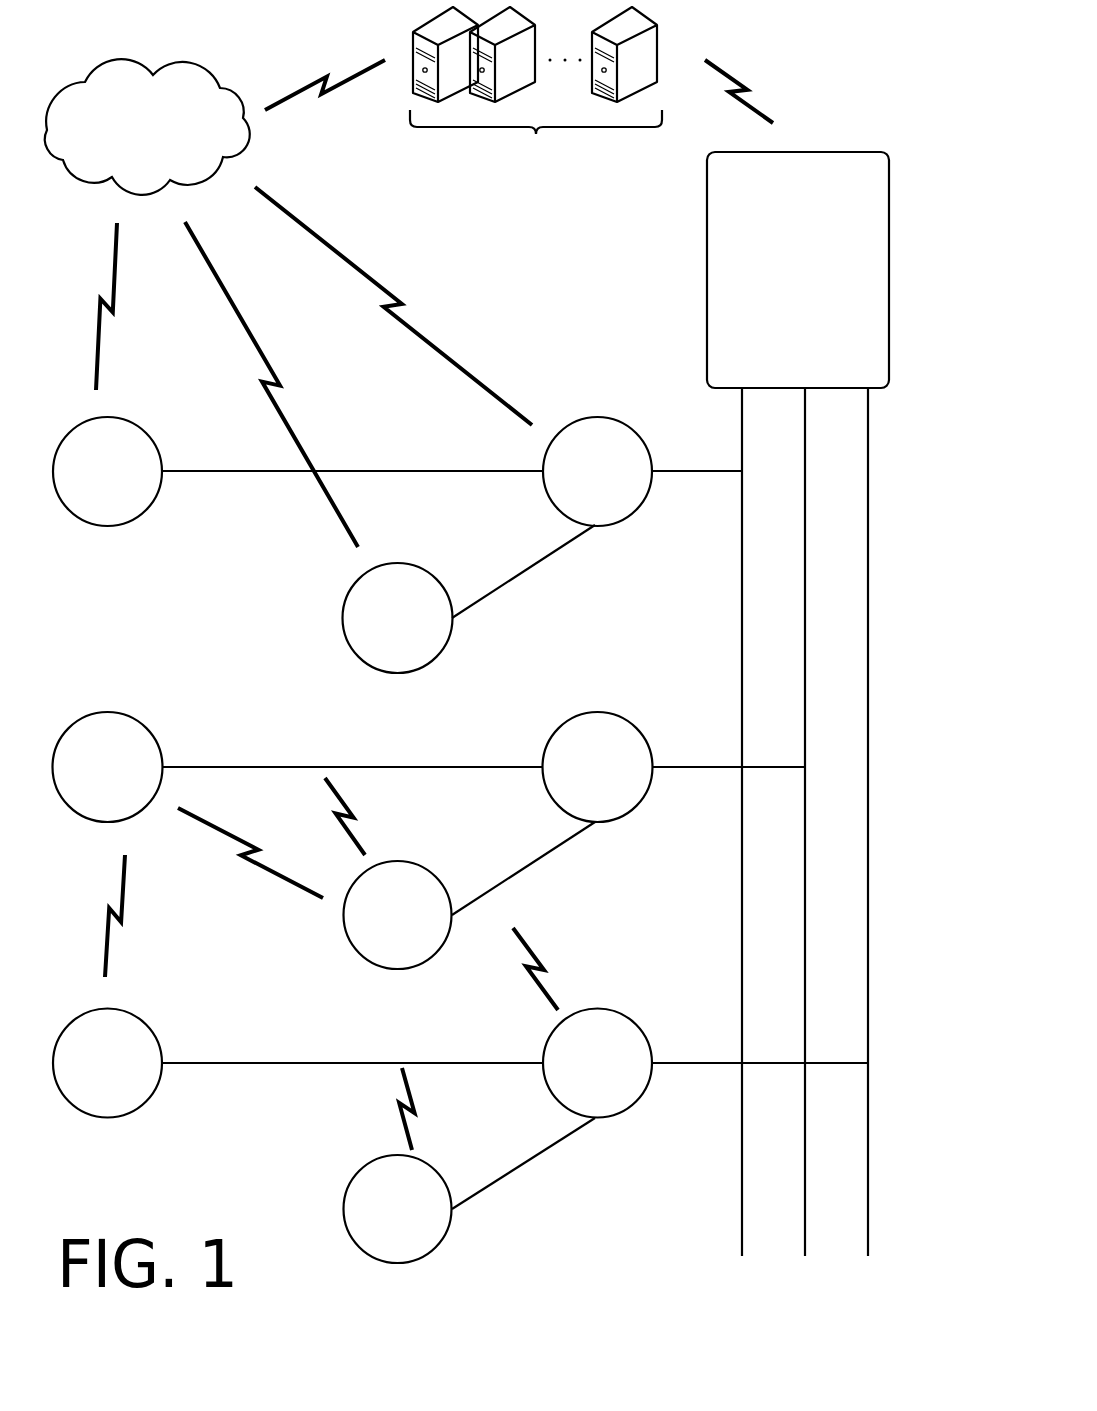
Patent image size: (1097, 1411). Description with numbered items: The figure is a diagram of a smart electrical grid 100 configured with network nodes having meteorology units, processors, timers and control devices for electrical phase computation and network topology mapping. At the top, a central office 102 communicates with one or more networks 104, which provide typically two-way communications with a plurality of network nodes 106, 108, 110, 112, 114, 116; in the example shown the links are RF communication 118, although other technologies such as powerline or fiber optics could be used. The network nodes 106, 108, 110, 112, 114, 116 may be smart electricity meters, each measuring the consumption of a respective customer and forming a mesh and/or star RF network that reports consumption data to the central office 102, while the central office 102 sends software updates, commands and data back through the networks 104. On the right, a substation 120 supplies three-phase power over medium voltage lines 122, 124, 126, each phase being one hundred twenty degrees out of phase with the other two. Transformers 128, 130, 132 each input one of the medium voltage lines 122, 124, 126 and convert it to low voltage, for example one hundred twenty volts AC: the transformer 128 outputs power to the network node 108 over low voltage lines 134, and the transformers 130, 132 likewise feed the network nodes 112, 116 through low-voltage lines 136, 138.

The smart electrical grid 100 is at (862, 40).
The central office 102 is at (535, 90).
The networks 104 is at (147, 127).
The network node 106 is at (107, 471).
The network node 108 is at (398, 618).
The network node 110 is at (108, 767).
The network node 112 is at (398, 915).
The network node 114 is at (107, 1063).
The network node 116 is at (398, 1209).
The RF communication 118 is at (428, 323).
The substation 120 is at (798, 270).
The medium voltage line 122 is at (742, 558).
The medium voltage line 124 is at (805, 688).
The medium voltage line 126 is at (868, 830).
The transformer 128 is at (597, 471).
The transformer 130 is at (598, 767).
The transformer 132 is at (597, 1063).
The low voltage lines 134 is at (528, 570).
The low-voltage lines 136 is at (530, 862).
The low-voltage lines 138 is at (530, 1157).